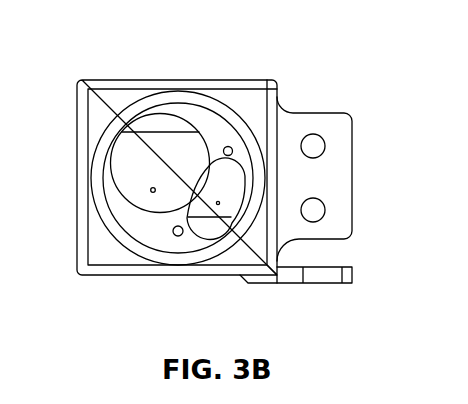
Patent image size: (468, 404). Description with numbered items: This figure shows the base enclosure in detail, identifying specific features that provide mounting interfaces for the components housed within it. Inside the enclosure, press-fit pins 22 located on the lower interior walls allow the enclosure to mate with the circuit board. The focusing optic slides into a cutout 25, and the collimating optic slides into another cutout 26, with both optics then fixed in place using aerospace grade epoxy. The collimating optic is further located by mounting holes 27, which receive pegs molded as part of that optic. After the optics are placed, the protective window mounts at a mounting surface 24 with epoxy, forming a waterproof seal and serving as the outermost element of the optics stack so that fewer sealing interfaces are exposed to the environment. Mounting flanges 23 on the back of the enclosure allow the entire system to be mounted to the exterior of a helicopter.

The press-fit pins 22 is at (150, 191).
The mounting flanges 23 is at (348, 262).
The mounting surface 24 is at (245, 137).
The cutout 25 is at (161, 113).
The cutout 26 is at (206, 241).
The mounting holes 27 is at (173, 232).